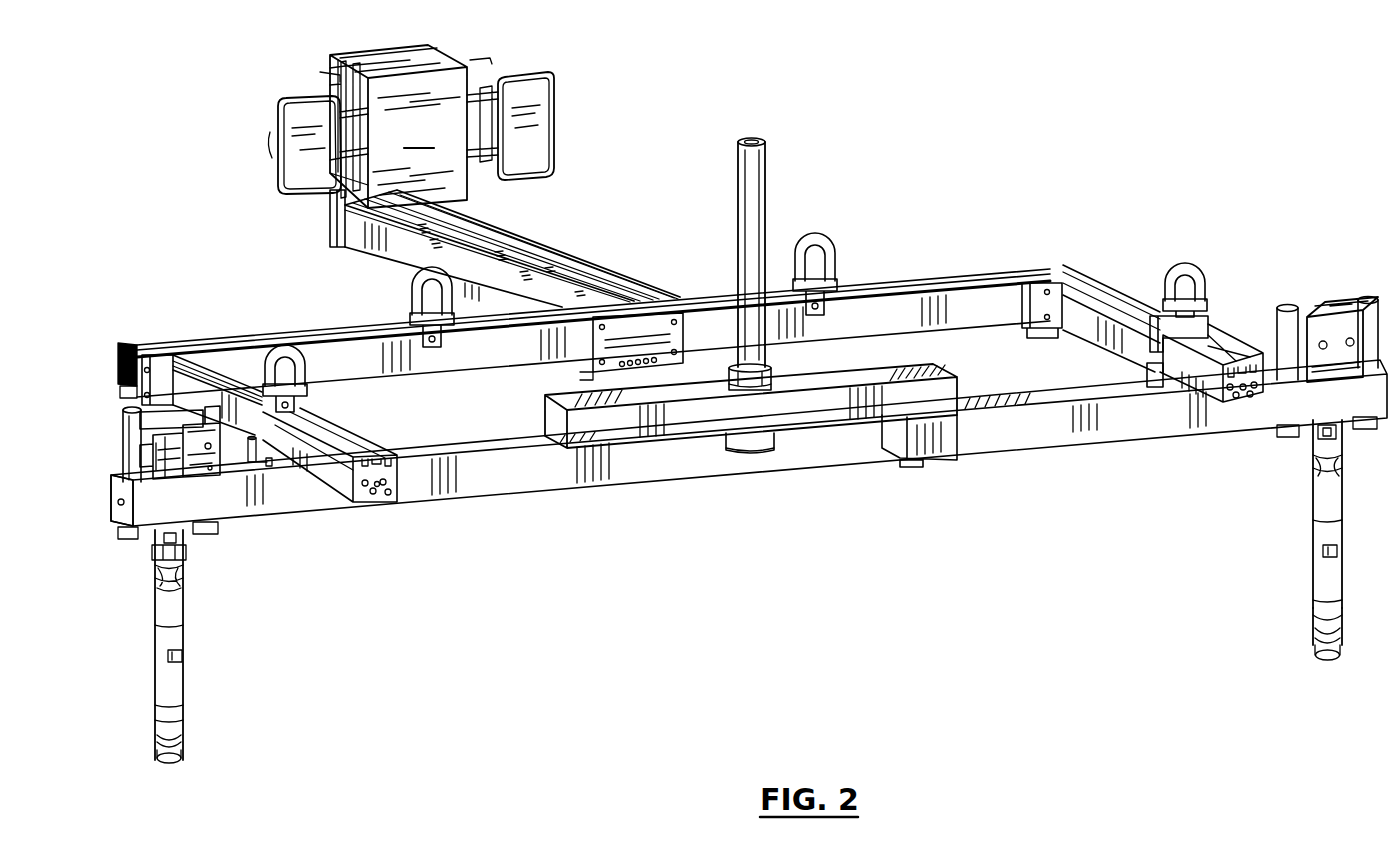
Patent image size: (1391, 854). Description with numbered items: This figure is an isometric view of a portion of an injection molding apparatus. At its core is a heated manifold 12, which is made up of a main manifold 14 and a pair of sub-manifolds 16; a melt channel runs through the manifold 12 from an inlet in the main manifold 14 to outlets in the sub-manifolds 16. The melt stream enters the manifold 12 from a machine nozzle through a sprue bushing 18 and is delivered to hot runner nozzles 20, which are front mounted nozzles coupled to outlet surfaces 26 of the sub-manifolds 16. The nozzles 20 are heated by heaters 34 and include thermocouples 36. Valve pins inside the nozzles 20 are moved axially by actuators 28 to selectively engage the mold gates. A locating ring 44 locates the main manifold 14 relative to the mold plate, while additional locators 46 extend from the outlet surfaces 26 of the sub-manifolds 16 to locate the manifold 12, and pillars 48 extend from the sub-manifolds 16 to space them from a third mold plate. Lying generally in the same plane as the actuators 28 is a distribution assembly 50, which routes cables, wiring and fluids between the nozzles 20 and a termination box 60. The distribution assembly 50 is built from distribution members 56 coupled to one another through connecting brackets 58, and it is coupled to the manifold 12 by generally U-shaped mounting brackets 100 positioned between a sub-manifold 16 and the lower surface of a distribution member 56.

The manifold 12 is at (749, 390).
The main manifold 14 is at (683, 428).
The sub-manifolds 16 is at (583, 478).
The sprue bushing 18 is at (765, 182).
The hot runner nozzles 20 is at (175, 640).
The outlet surfaces 26 is at (113, 520).
The actuators 28 is at (1337, 333).
The heaters 34 is at (1305, 633).
The thermocouples 36 is at (1312, 573).
The locating ring 44 is at (753, 440).
The locators 46 is at (923, 467).
The pillars 48 is at (128, 433).
The distribution assembly 50 is at (273, 328).
The distribution members 56 is at (1138, 352).
The connecting brackets 58 is at (1053, 330).
The termination box 60 is at (411, 126).
The mounting brackets 100 is at (267, 462).